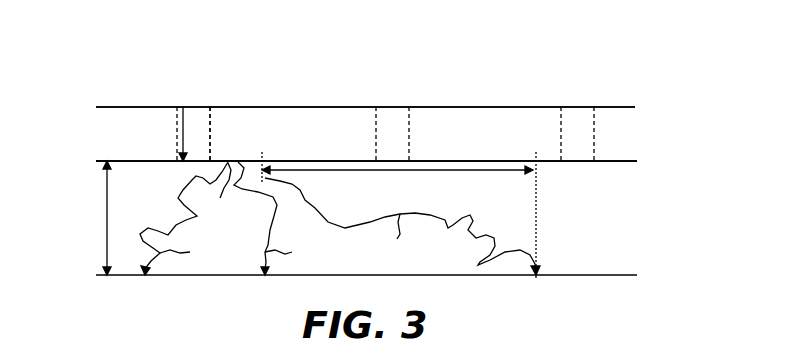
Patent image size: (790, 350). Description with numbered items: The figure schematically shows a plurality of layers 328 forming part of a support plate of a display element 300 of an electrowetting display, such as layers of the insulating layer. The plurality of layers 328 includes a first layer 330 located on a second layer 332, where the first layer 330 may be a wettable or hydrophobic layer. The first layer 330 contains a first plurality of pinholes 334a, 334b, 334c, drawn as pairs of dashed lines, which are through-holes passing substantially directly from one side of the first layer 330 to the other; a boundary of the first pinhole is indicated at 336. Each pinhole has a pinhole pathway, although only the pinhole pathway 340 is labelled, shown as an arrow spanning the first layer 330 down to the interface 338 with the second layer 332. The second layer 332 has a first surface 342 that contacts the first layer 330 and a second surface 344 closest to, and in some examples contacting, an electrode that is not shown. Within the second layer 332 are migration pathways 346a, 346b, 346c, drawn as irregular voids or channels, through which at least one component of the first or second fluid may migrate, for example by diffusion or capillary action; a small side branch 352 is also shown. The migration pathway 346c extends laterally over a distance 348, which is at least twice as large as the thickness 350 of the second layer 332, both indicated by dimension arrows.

The display element 300 is at (113, 40).
The plurality of layers 328 is at (634, 70).
The first layer 330 is at (117, 113).
The second layer 332 is at (622, 218).
The pinhole 334a is at (190, 113).
The pinhole 334b is at (390, 113).
The pinhole 334c is at (575, 113).
The element boundary 336 is at (206, 108).
The interface layer 338 is at (200, 161).
The pinhole pathway 340 is at (181, 130).
The first surface 342 is at (612, 163).
The second surface 344 is at (612, 273).
The migration pathway 346a is at (195, 218).
The migration pathway 346b is at (292, 218).
The migration pathway 346c is at (402, 226).
The distance 348 is at (457, 161).
The thickness 350 is at (106, 216).
The crack branch 352 is at (225, 193).